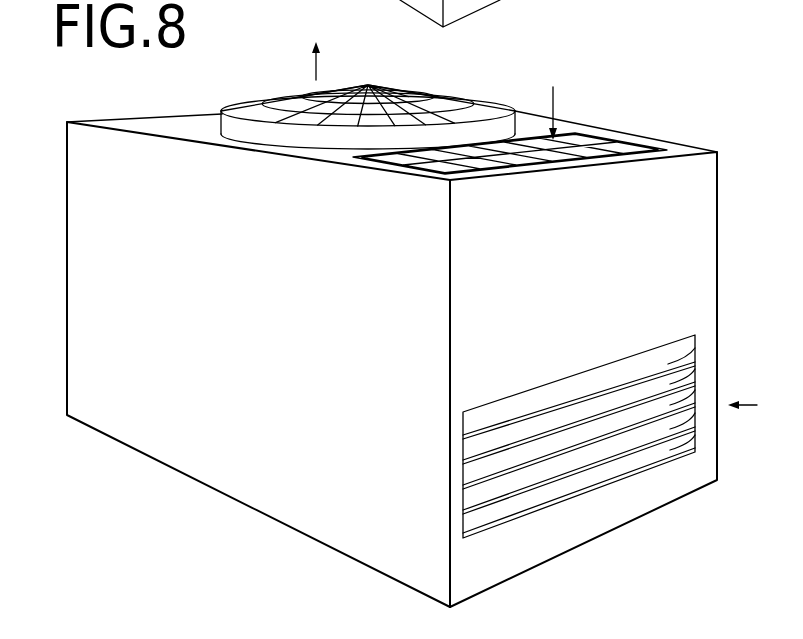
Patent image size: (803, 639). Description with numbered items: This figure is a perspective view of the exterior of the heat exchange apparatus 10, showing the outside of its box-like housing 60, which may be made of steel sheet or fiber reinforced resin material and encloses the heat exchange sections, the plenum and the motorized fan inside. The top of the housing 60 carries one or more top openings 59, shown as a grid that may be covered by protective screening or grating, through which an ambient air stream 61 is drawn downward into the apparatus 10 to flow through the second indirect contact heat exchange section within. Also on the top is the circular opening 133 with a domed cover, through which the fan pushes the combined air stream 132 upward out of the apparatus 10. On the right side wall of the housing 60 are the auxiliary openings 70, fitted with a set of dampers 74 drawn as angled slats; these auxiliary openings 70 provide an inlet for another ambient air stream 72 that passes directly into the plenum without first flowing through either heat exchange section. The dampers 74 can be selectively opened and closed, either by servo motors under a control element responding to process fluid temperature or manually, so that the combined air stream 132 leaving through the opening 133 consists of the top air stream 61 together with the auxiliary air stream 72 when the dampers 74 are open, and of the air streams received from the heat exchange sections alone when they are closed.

The heat exchange apparatus 10 is at (395, 324).
The top openings 59 is at (587, 147).
The housing 60 is at (102, 396).
The ambient air stream 61 is at (553, 97).
The auxiliary openings 70 is at (580, 435).
The auxiliary ambient air stream 72 is at (748, 405).
The dampers 74 is at (477, 418).
The combined air stream 132 is at (316, 72).
The top outlet opening 133 is at (400, 97).